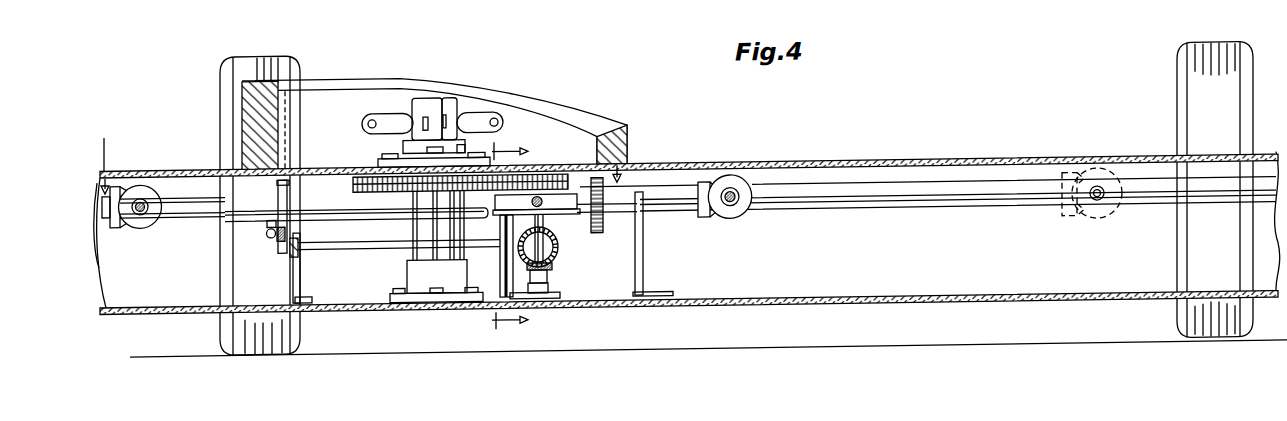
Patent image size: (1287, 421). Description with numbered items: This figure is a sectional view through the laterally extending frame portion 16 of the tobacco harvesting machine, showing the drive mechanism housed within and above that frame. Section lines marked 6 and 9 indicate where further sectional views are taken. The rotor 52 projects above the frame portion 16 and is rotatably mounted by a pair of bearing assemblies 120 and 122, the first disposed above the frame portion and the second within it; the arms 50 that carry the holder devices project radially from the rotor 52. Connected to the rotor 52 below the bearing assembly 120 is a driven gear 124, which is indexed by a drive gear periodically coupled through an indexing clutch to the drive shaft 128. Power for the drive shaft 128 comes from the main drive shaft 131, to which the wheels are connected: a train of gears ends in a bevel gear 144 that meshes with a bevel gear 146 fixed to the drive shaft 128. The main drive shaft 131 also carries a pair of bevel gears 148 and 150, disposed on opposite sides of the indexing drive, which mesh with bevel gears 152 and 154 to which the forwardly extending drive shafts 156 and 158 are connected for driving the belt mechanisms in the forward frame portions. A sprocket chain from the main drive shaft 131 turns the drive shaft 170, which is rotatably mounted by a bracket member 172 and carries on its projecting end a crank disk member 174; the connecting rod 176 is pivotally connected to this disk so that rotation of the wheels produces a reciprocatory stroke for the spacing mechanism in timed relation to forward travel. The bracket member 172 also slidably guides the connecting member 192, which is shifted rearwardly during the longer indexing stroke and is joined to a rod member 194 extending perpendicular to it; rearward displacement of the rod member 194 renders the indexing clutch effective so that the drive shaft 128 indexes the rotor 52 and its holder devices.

The section line 6- 6 is at (369, 162).
The section line 9- 9 is at (521, 237).
The laterally extending frame portion 16 is at (327, 171).
The arms 50 is at (481, 121).
The rotor 52 is at (420, 103).
The bearing assembly 120 is at (465, 155).
The bearing assembly 122 is at (423, 290).
The driven gear 124 is at (358, 182).
The drive shaft 128 is at (547, 237).
The main drive shaft 131 is at (877, 202).
The bevel gear 144 is at (557, 259).
The bevel gear 146 is at (551, 271).
The bevel gear 148 is at (118, 229).
The bevel gear 150 is at (713, 229).
The bevel gear 152 is at (153, 219).
The bevel gear 154 is at (744, 217).
The drive shaft 156 is at (141, 205).
The drive shaft 158 is at (732, 202).
The drive shaft 170 is at (353, 217).
The bracket member 172 is at (292, 265).
The crank disk member 174 is at (278, 195).
The connecting rod 176 is at (268, 229).
The connecting member 192 is at (300, 258).
The rod member 194 is at (362, 253).